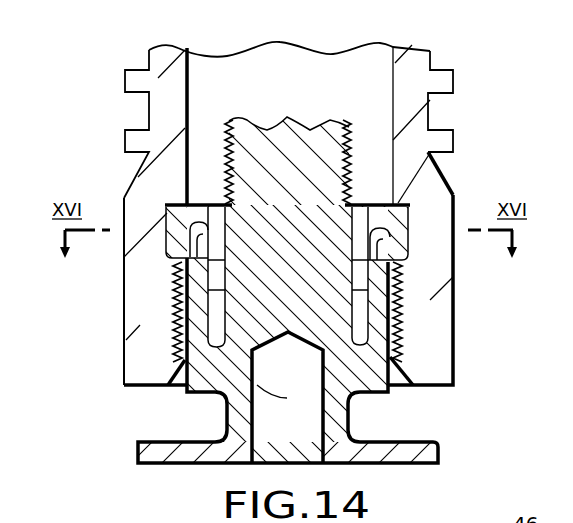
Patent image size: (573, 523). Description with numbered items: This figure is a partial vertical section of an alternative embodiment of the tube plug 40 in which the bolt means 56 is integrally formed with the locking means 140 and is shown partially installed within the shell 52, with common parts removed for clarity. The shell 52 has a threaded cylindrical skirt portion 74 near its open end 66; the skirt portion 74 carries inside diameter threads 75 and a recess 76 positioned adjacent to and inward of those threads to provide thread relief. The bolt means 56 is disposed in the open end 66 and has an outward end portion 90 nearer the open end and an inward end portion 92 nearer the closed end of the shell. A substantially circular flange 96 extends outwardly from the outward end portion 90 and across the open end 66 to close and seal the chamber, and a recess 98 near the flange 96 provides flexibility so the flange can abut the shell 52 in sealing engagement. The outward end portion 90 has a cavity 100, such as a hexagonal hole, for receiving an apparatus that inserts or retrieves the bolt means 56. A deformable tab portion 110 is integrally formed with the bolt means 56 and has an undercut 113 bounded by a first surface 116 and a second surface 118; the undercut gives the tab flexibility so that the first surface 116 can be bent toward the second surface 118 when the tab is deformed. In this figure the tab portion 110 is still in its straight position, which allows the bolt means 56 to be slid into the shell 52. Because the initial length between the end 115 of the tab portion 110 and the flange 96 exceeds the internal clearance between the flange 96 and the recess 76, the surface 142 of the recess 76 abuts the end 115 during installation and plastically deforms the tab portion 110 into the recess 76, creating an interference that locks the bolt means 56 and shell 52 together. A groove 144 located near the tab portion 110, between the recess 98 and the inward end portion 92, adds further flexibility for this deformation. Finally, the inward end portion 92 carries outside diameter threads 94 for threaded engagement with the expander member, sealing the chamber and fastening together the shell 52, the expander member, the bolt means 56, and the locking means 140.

The tube plug 40 is at (84, 134).
The shell 52 is at (148, 50).
The bolt means 56 is at (245, 130).
The open end 66 is at (147, 363).
The skirt portion 74 is at (442, 287).
The inside diameter threads 75 is at (402, 334).
The recess 76 is at (407, 242).
The outward end portion 90 is at (402, 366).
The inward end portion 92 is at (347, 127).
The outside diameter threads 94 is at (357, 157).
The flange 96 is at (440, 450).
The recess 98 is at (360, 420).
The cavity 100 is at (252, 382).
The deformable tab portion 110 is at (172, 204).
The undercut 113 is at (452, 195).
The end 115 is at (348, 230).
The first surface 116 is at (172, 246).
The second surface 118 is at (172, 278).
The locking means 140 is at (353, 308).
The surface 142 is at (392, 200).
The groove 144 is at (226, 226).